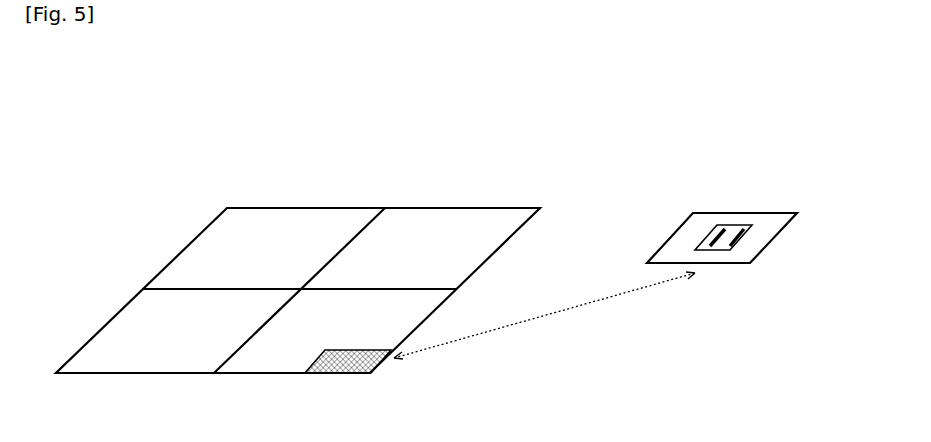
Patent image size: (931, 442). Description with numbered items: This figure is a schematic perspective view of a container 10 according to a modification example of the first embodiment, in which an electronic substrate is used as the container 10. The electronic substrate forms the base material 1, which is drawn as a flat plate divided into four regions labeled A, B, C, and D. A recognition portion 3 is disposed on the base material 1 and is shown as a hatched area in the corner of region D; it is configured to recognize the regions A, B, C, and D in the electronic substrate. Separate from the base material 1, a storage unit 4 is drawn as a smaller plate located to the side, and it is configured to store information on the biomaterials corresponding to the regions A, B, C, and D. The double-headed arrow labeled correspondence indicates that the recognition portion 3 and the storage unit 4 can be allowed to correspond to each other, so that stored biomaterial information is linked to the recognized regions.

The container 10 is at (505, 150).
The base material 1 is at (328, 217).
The recognition portion 3 is at (378, 375).
The storage unit 4 is at (740, 243).